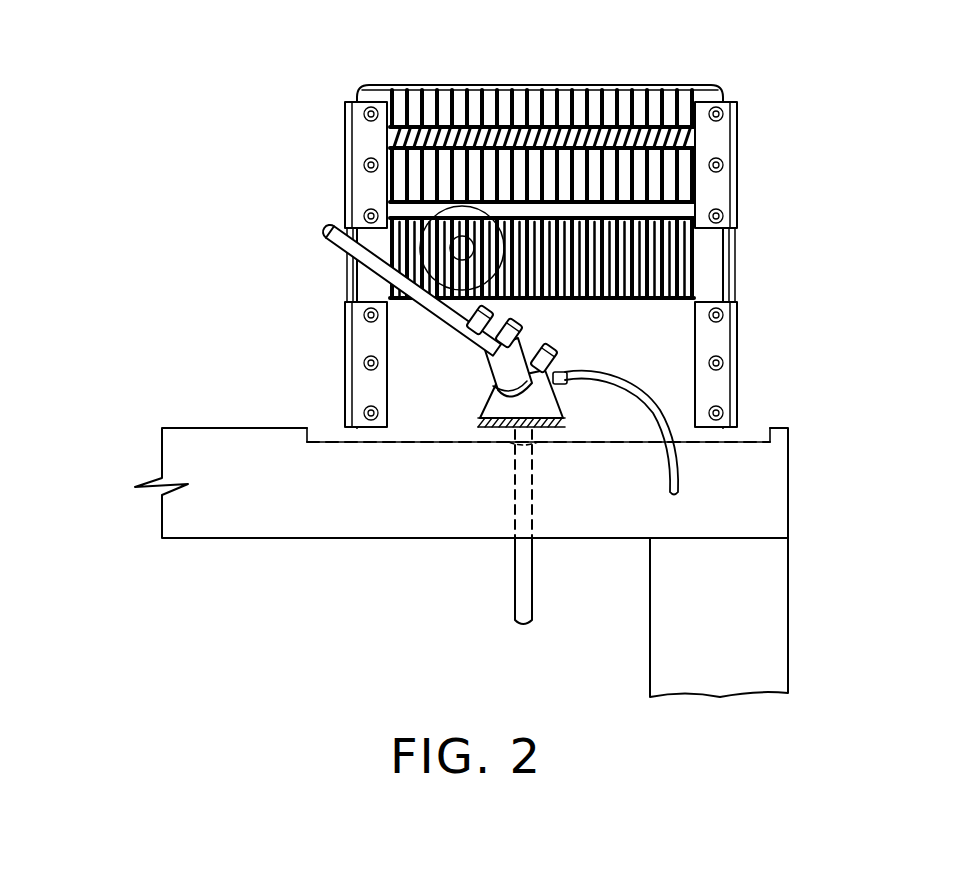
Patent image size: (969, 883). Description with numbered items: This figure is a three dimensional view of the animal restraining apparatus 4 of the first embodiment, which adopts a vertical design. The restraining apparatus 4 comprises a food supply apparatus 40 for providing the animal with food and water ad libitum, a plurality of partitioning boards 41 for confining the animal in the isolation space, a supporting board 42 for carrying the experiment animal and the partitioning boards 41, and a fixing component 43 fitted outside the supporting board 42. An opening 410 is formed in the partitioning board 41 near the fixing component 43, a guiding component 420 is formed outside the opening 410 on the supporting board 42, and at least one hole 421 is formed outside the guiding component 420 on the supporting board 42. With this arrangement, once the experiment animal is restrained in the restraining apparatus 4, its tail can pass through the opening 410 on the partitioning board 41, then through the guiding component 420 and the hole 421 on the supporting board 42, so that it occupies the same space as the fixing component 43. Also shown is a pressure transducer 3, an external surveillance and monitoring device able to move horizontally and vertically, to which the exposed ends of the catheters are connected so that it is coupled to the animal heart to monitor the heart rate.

The pressure transducer 3 is at (335, 250).
The restraining apparatus 4 is at (127, 87).
The food supply apparatus 40 is at (541, 217).
The partitioning boards 41 is at (667, 352).
The opening 410 is at (550, 399).
The supporting board 42 is at (740, 436).
The guiding component 420 is at (470, 427).
The hole 421 is at (535, 445).
The fixing component 43 is at (520, 582).